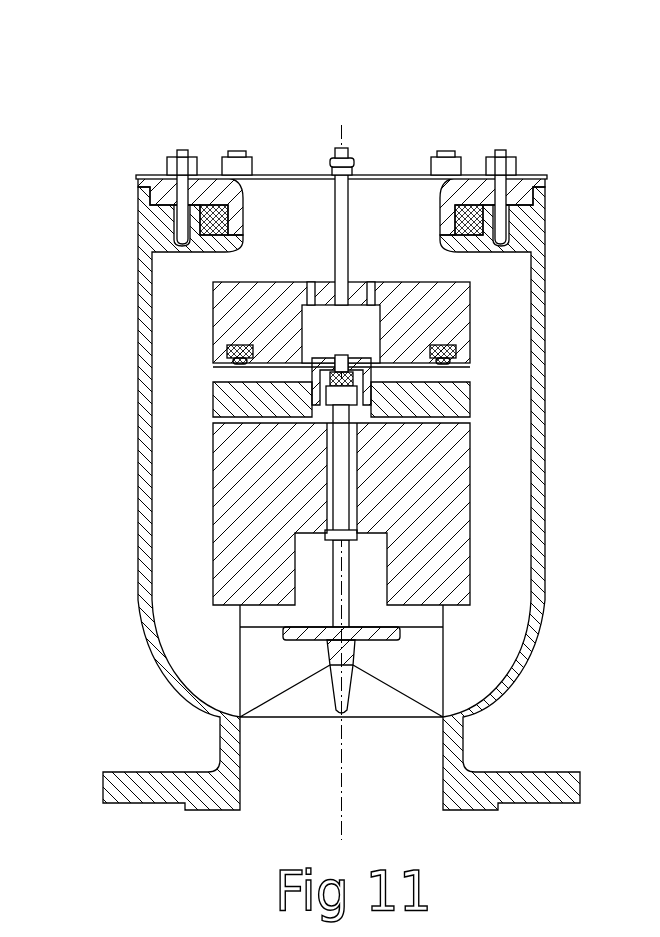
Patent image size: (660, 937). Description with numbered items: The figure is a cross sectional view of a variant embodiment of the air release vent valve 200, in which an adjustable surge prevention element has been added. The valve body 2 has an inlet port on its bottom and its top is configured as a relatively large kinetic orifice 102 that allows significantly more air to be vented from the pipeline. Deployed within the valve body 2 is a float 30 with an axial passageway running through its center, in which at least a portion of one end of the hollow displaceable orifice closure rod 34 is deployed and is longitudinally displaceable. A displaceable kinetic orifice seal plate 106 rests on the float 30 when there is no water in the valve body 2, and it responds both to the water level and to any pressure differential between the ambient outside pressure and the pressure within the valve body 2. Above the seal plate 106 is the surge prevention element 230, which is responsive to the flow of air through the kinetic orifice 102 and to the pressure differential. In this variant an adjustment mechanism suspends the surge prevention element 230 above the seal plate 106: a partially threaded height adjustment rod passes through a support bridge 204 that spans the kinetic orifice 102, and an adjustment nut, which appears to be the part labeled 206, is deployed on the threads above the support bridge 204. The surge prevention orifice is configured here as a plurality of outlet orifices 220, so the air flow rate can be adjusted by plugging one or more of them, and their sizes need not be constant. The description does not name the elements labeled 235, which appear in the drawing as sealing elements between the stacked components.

The valve body 2 is at (533, 503).
The float 30 is at (252, 527).
The orifice closure rod 34 is at (340, 452).
The kinetic orifice 102 is at (427, 198).
The kinetic orifice seal plate 106 is at (455, 397).
The air release vent valve 200 is at (180, 127).
The support bridge 204 is at (350, 170).
The central bolt 206 is at (334, 160).
The outlet orifice 220 is at (300, 281).
The surge prevention element 230 is at (447, 330).
The seals 235 is at (230, 352).